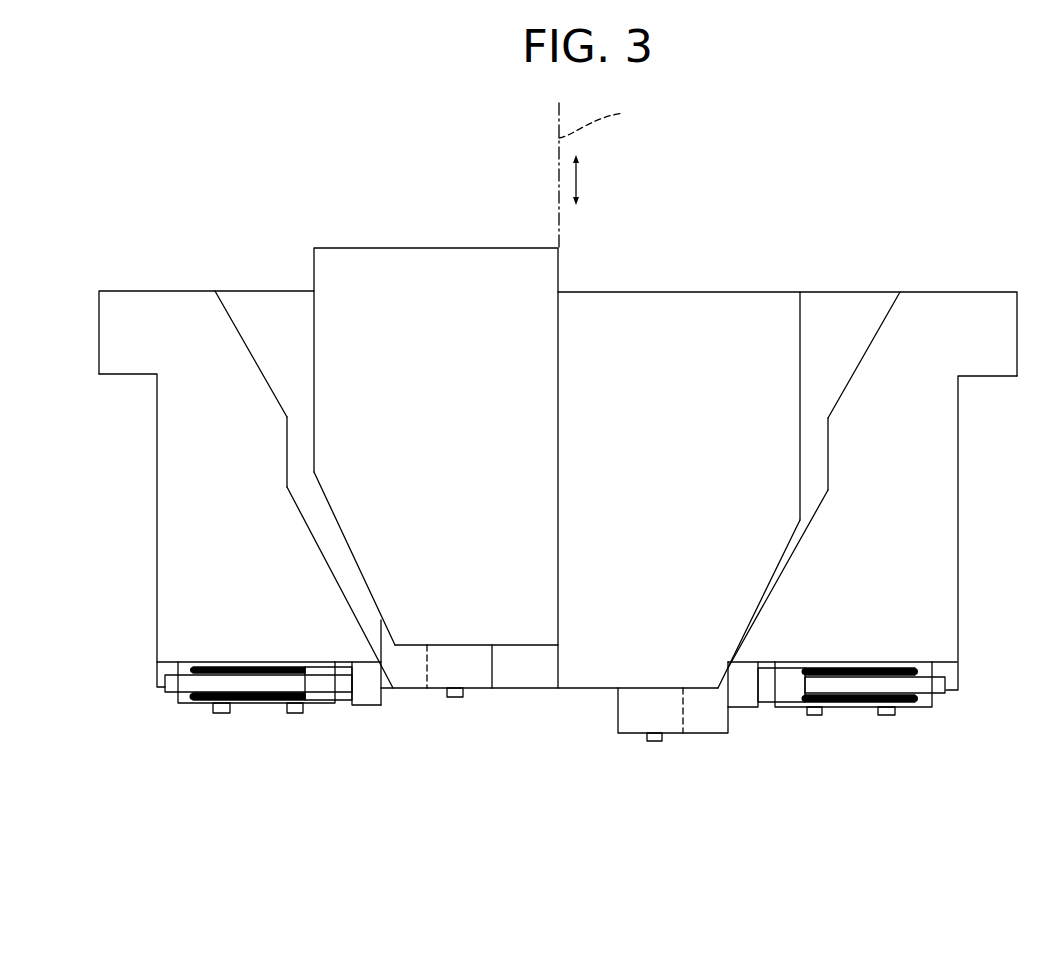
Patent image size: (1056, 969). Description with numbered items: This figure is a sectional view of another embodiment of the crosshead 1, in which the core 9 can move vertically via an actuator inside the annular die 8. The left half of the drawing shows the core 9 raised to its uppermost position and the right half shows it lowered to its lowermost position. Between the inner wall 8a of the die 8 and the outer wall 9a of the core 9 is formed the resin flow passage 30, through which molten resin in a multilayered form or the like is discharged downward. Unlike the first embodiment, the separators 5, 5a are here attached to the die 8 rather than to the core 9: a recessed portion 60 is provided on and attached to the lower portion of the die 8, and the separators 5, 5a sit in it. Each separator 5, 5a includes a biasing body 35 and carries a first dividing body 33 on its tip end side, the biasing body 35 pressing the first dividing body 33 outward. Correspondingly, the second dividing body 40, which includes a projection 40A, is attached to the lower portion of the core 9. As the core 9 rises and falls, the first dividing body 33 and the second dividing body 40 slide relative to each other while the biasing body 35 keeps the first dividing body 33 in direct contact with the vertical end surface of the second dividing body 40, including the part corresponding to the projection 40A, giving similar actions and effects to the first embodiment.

The crosshead 1 is at (737, 248).
The resin flow passage 30 is at (276, 332).
The die 8 is at (182, 440).
The inner wall of the die 8a is at (310, 530).
The core 9 is at (397, 498).
The outer wall of the core 9a is at (357, 573).
The second dividing body 40 is at (410, 675).
The projection 40A is at (385, 643).
The first dividing body 33 is at (358, 705).
The recessed portion 60 is at (170, 663).
The biasing body 35 is at (256, 700).
The separator 5 is at (245, 710).
The separator 5a is at (855, 715).